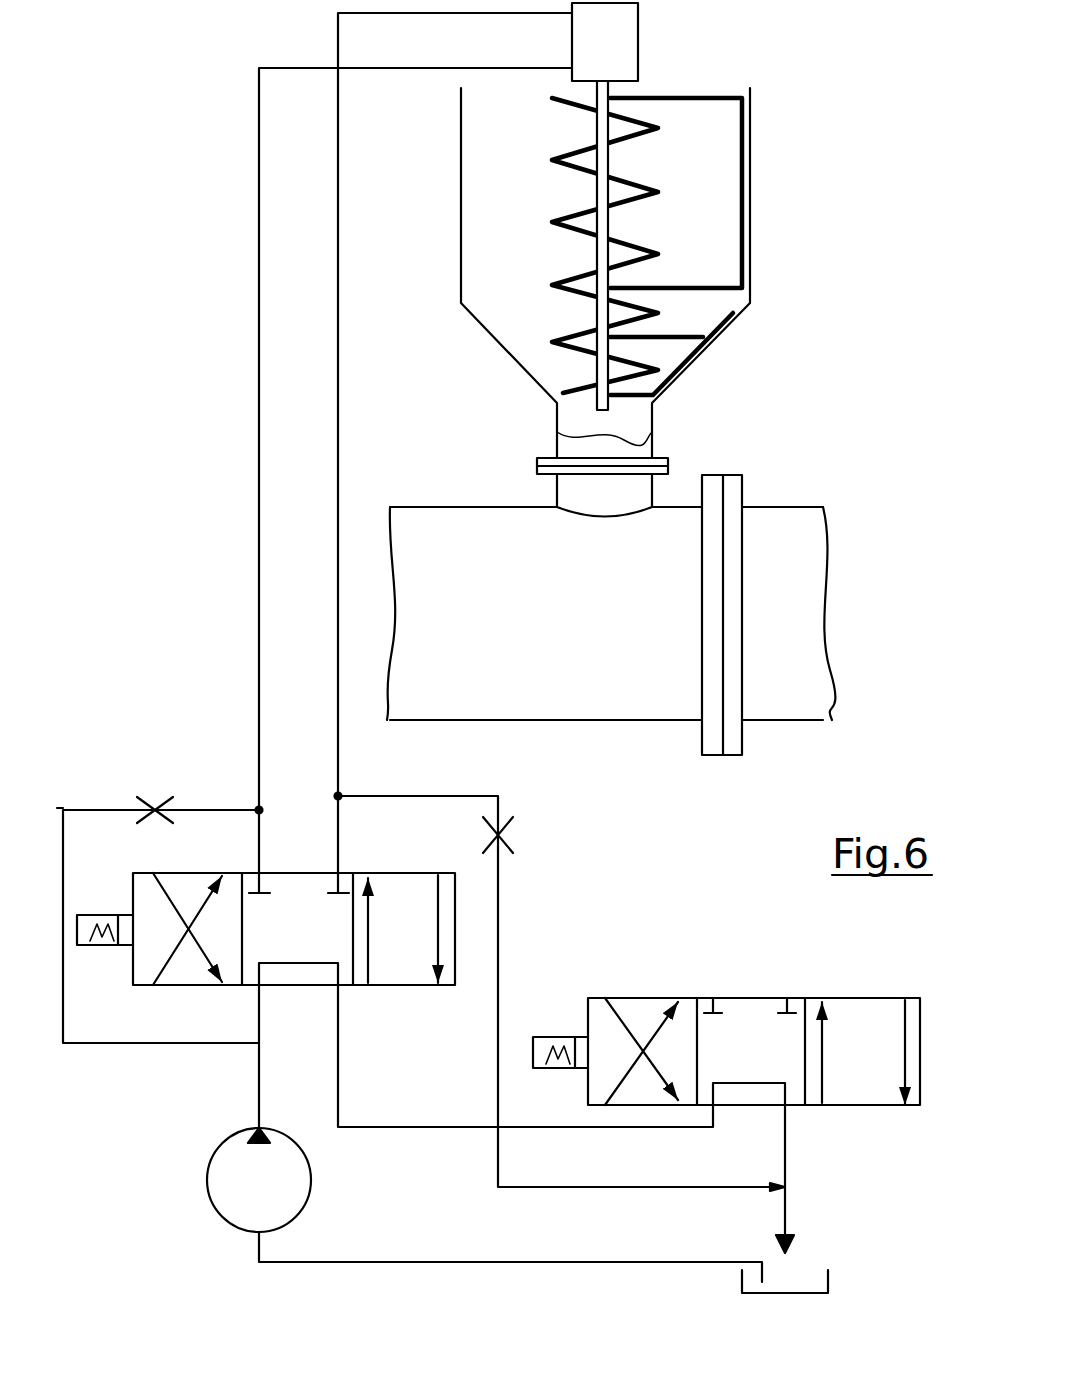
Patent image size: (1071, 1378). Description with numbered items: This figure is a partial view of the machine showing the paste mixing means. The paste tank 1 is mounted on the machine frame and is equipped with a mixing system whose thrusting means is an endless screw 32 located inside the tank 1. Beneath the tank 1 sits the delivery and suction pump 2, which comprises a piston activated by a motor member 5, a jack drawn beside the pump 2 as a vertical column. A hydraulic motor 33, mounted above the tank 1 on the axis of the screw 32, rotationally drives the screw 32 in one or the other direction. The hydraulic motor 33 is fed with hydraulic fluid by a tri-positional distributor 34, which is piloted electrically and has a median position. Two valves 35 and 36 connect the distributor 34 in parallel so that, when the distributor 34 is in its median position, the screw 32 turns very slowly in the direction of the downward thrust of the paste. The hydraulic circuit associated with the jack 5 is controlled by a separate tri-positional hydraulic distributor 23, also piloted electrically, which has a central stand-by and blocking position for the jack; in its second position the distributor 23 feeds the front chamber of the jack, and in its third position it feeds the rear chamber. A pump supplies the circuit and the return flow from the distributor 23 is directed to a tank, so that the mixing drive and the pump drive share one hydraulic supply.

The paste tank 1 is at (748, 316).
The delivery and suction pump 2 is at (497, 550).
The motor member 5 is at (777, 565).
The tri-positional hydraulic distributor 23 is at (775, 998).
The endless screw 32 is at (647, 245).
The hydraulic motor 33 is at (623, 62).
The tri-positional distributor 34 is at (403, 873).
The valve 35 is at (507, 858).
The valve 36 is at (142, 803).